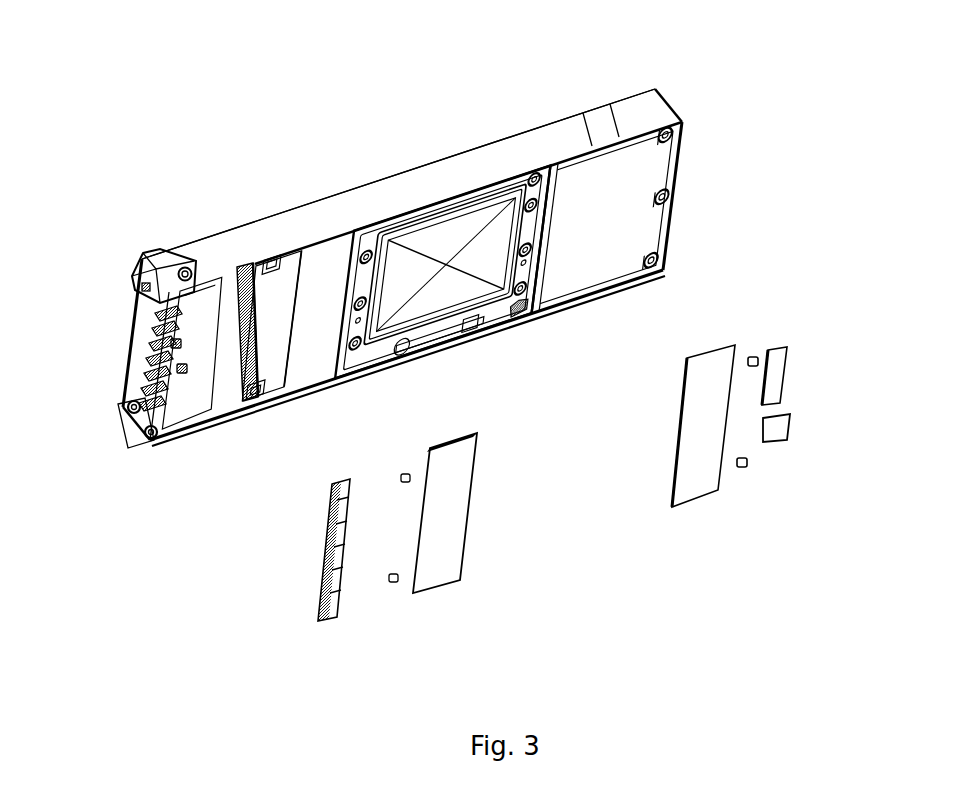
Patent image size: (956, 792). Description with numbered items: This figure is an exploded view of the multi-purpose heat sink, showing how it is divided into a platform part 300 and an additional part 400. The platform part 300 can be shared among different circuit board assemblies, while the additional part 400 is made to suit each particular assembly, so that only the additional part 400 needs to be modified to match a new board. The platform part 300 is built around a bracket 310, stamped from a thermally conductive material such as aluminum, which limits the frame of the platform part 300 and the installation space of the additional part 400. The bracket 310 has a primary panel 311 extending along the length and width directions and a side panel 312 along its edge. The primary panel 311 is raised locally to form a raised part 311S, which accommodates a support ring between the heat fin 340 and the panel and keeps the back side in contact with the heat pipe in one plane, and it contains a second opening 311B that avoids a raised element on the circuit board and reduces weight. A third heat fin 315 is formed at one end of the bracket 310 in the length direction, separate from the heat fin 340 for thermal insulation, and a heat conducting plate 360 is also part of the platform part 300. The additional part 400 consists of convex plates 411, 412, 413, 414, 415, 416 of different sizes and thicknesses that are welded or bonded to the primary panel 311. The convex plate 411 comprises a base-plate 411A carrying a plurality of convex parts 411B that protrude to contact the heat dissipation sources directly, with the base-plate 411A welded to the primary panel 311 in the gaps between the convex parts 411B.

The platform part 300 is at (282, 124).
The bracket 310 is at (636, 246).
The primary panel 311 is at (606, 169).
The second opening 311B is at (220, 358).
The raised part 311S is at (548, 300).
The side panel 312 is at (452, 178).
The third heat fin 315 is at (160, 323).
The heat fin 340 is at (240, 296).
The heat conducting plate 360 is at (477, 327).
The additional part 400 is at (543, 582).
The convex plate 411 is at (334, 618).
The base-plate 411A is at (327, 581).
The convex parts 411B is at (332, 547).
The convex plate 412 is at (444, 555).
The convex plate 413 is at (690, 480).
The convex plate 414 is at (746, 470).
The convex plate 415 is at (775, 352).
The convex plate 416 is at (780, 438).